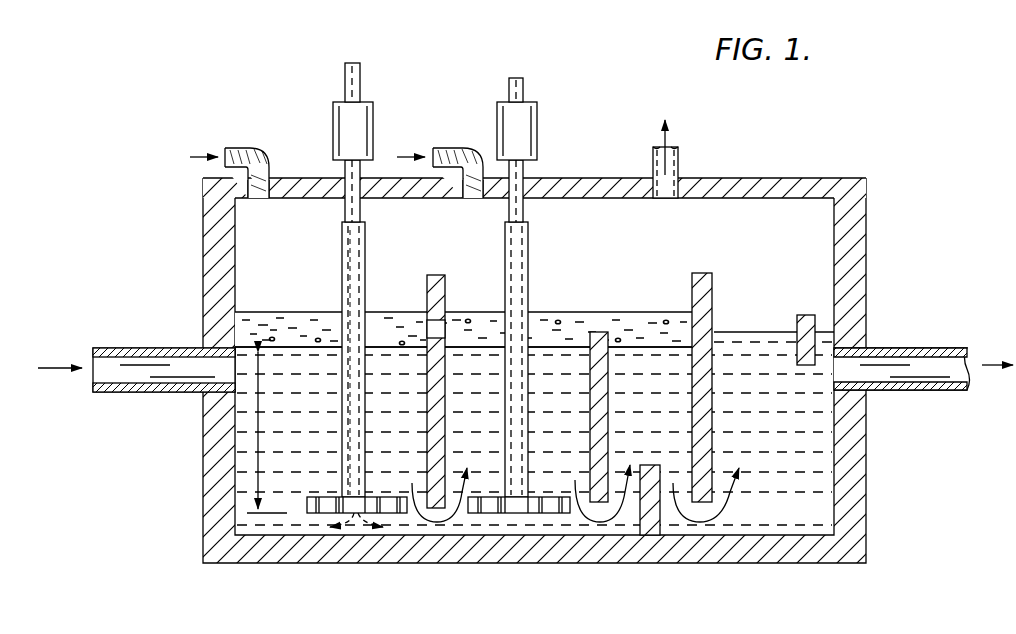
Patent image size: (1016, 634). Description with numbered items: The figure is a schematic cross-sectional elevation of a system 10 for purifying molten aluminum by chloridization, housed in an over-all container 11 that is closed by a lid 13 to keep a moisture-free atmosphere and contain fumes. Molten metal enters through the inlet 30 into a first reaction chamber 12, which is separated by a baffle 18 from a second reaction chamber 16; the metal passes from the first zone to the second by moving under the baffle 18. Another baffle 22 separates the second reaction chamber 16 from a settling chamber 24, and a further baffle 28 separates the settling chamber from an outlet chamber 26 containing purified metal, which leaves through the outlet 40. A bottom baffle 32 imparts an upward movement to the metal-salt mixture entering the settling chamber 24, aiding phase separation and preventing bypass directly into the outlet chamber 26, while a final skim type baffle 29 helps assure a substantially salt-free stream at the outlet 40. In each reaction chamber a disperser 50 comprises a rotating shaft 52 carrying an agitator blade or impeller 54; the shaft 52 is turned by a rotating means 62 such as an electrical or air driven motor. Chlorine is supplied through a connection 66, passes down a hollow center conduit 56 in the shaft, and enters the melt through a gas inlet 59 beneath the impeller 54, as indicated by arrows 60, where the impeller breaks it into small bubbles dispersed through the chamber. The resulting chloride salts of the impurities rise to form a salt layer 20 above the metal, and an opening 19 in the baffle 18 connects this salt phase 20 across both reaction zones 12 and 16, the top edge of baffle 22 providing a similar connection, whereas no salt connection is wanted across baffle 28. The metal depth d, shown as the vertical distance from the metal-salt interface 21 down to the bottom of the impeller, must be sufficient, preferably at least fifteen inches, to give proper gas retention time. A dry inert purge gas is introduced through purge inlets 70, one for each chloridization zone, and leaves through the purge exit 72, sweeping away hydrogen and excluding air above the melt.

The system 10 is at (525, 334).
The container 11 is at (855, 500).
The first reaction chamber 12 is at (316, 416).
The lid 13 is at (770, 178).
The second reaction chamber 16 is at (490, 416).
The baffle 18 is at (435, 275).
The opening 19 is at (447, 328).
The salt layer 20 is at (243, 330).
The metal-salt interface 21 is at (280, 347).
The baffle 22 is at (600, 332).
The settling chamber 24 is at (661, 416).
The outlet chamber 26 is at (777, 416).
The baffle 28 is at (700, 273).
The skim type baffle 29 is at (807, 315).
The inlet 30 is at (127, 392).
The bottom baffle 32 is at (660, 500).
The outlet 40 is at (913, 348).
The disperser 50 is at (335, 492).
The rotating shaft 52 is at (343, 275).
The impeller 54 is at (389, 495).
The hollow center conduit 56 is at (343, 250).
The gas inlet 59 is at (355, 515).
The arrows 60 is at (398, 525).
The rotating means 62 is at (374, 125).
The connection 66 is at (345, 83).
The purge inlet 70 is at (441, 148).
The purge exit 72 is at (680, 155).